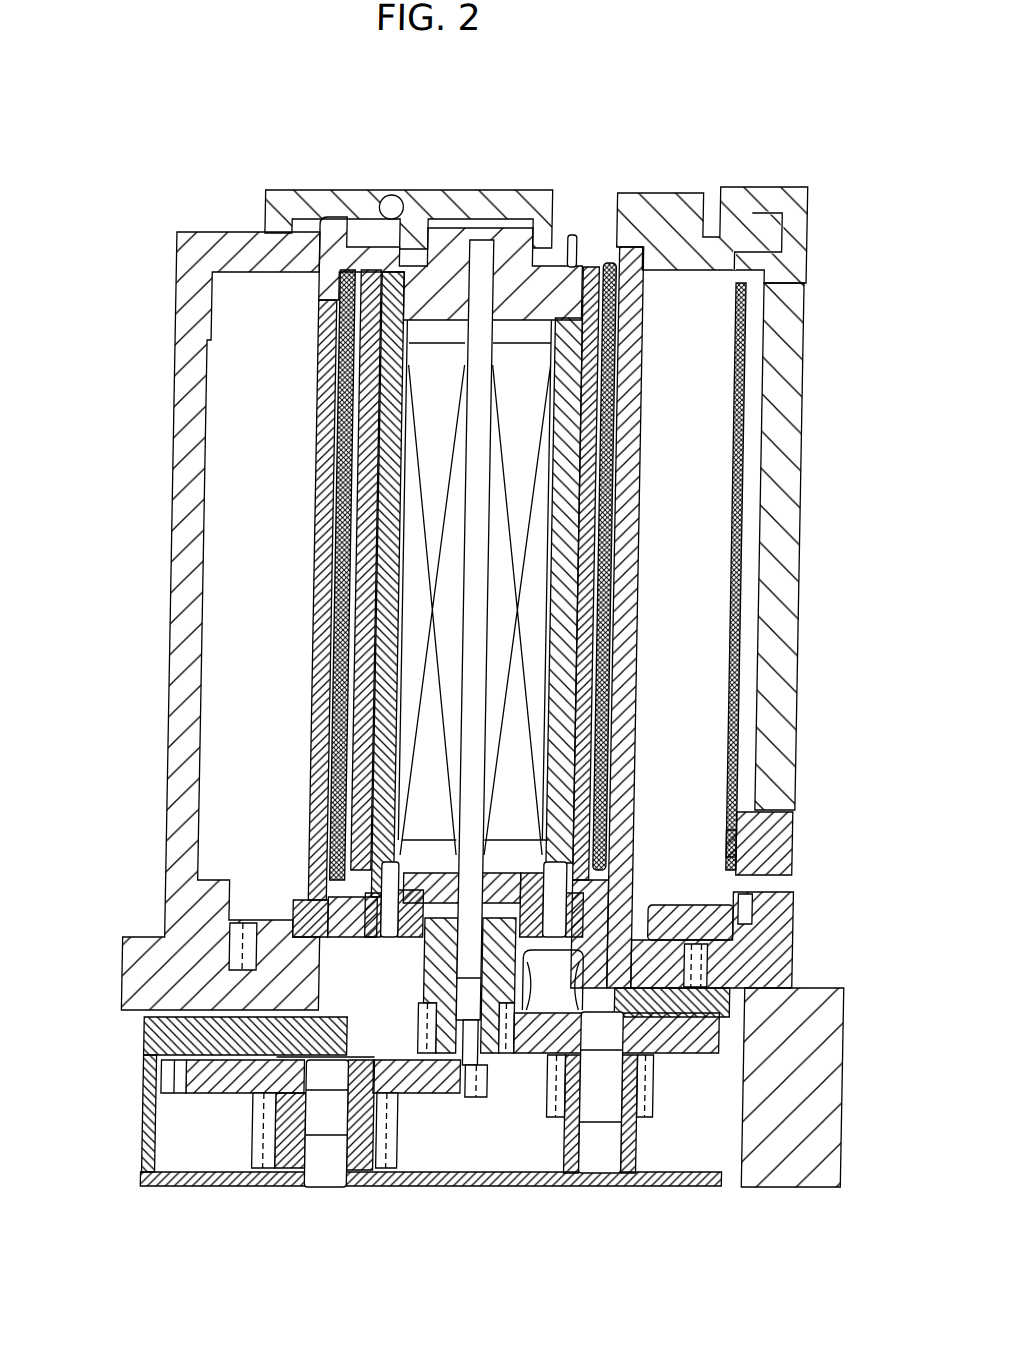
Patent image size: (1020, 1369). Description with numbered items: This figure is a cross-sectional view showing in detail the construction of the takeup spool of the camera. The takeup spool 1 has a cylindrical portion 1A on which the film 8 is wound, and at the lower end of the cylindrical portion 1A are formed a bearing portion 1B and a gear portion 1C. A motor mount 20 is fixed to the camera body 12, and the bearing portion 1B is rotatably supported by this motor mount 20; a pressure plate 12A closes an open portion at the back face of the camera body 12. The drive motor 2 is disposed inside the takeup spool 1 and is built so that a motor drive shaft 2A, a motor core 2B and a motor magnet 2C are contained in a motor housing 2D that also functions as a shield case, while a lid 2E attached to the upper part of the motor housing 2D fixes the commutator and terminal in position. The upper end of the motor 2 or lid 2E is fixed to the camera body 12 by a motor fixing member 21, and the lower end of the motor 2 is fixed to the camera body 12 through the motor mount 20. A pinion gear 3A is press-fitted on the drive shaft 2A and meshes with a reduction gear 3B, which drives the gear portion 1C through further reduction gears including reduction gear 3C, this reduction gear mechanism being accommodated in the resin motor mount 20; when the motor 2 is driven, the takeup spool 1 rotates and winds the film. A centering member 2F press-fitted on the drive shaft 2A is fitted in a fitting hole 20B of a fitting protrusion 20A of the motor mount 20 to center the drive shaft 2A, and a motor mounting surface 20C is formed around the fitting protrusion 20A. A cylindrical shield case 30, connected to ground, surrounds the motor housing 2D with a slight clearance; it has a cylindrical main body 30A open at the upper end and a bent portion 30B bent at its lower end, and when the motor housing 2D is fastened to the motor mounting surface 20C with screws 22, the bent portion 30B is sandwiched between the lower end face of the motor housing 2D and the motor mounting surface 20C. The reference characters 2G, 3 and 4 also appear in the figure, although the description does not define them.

The takeup spool 1 is at (676, 953).
The cylindrical portion 1A is at (633, 497).
The bearing portion 1B is at (665, 913).
The gear portion 1C is at (265, 940).
The drive motor 2 is at (470, 225).
The motor drive shaft 2A is at (480, 297).
The motor core 2B is at (521, 722).
The motor magnet 2C is at (395, 430).
The motor housing 2D is at (375, 381).
The lid 2E is at (509, 257).
The centering member 2F is at (410, 835).
The positioning pin 2G is at (574, 237).
The lower unit 3 is at (693, 1088).
The pinion gear 3A is at (472, 913).
The reduction gear 3B is at (640, 1152).
The reduction gear 3C is at (380, 1143).
The stopper block 4 is at (800, 830).
The film 8 is at (766, 585).
The camera body 12 is at (218, 247).
The pressure plate 12A is at (792, 372).
The motor mount 20 is at (184, 1030).
The fitting protrusion 20A is at (481, 1033).
The fitting hole 20B is at (589, 900).
The motor mounting surface 20C is at (351, 880).
The motor fixing member 21 is at (329, 203).
The screws 22 is at (322, 1060).
The shield case 30 is at (352, 512).
The cylindrical main body 30A is at (324, 583).
The bent portion 30B is at (620, 1050).